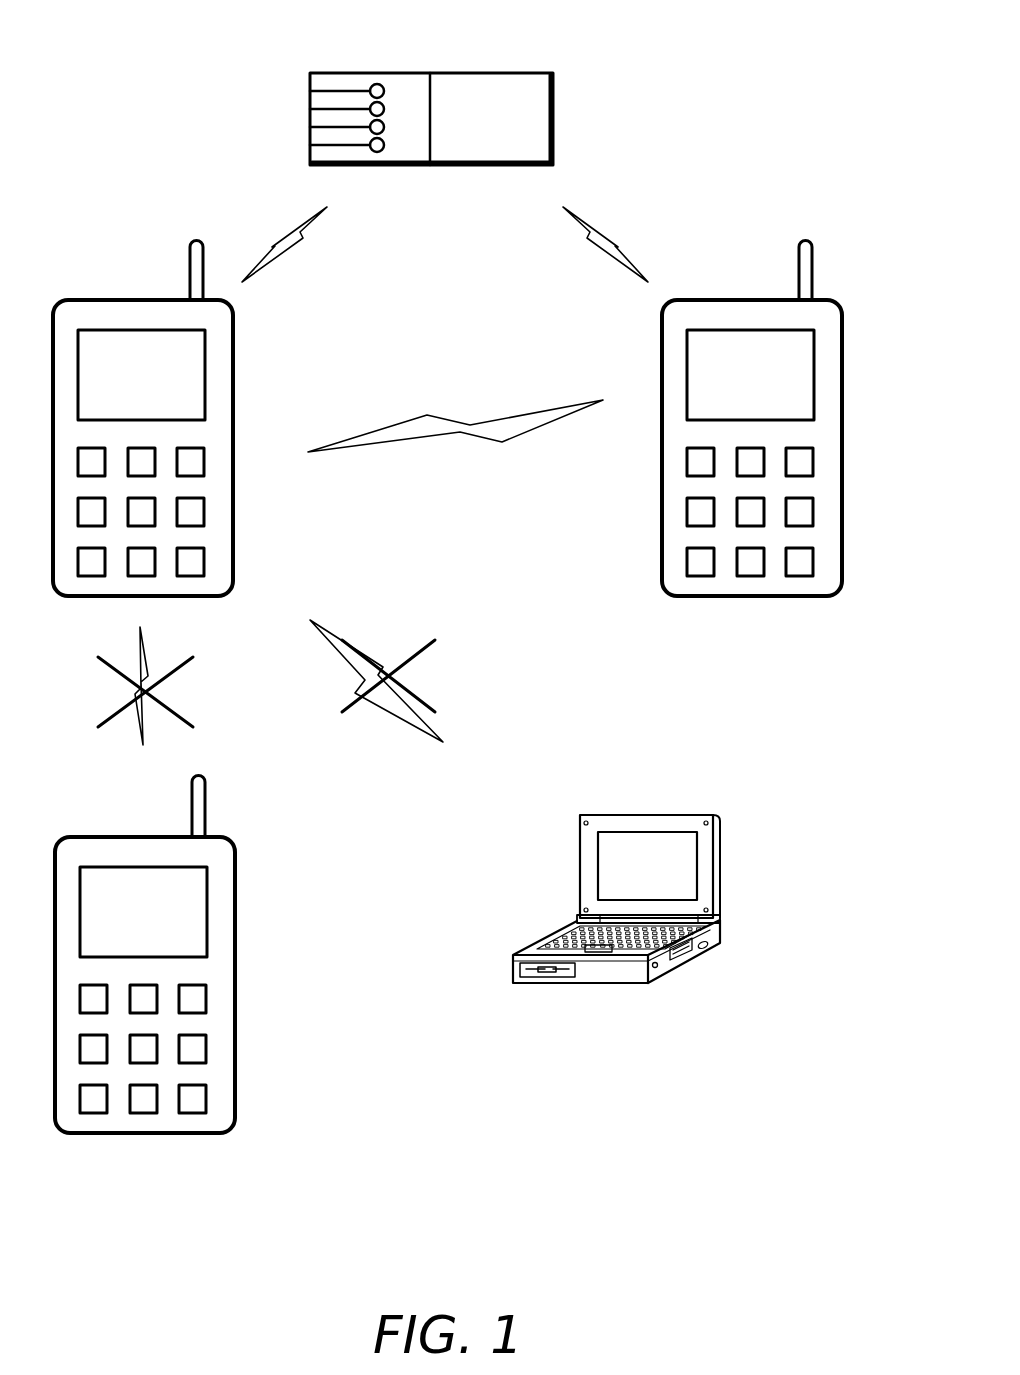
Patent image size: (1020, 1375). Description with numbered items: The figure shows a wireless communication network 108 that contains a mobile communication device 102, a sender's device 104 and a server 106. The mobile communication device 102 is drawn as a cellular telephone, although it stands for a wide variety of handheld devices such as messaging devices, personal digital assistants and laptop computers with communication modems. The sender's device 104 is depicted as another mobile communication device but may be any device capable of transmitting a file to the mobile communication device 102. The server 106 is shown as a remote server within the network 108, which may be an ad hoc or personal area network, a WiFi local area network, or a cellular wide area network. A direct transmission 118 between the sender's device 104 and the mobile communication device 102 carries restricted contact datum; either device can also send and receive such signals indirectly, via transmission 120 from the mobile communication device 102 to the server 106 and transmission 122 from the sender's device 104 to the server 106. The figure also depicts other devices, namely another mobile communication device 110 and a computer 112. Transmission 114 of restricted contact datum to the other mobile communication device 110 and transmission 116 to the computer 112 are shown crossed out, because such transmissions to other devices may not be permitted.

The mobile communication device 102 is at (143, 300).
The sender's device 104 is at (752, 300).
The server 106 is at (528, 73).
The network 108 is at (755, 50).
The another mobile communication device 110 is at (144, 837).
The computer 112 is at (702, 815).
The transmission 114 is at (140, 627).
The transmission 116 is at (310, 620).
The transmission 118 is at (453, 413).
The indirect transmission 120 is at (314, 220).
The indirect transmission 122 is at (578, 220).